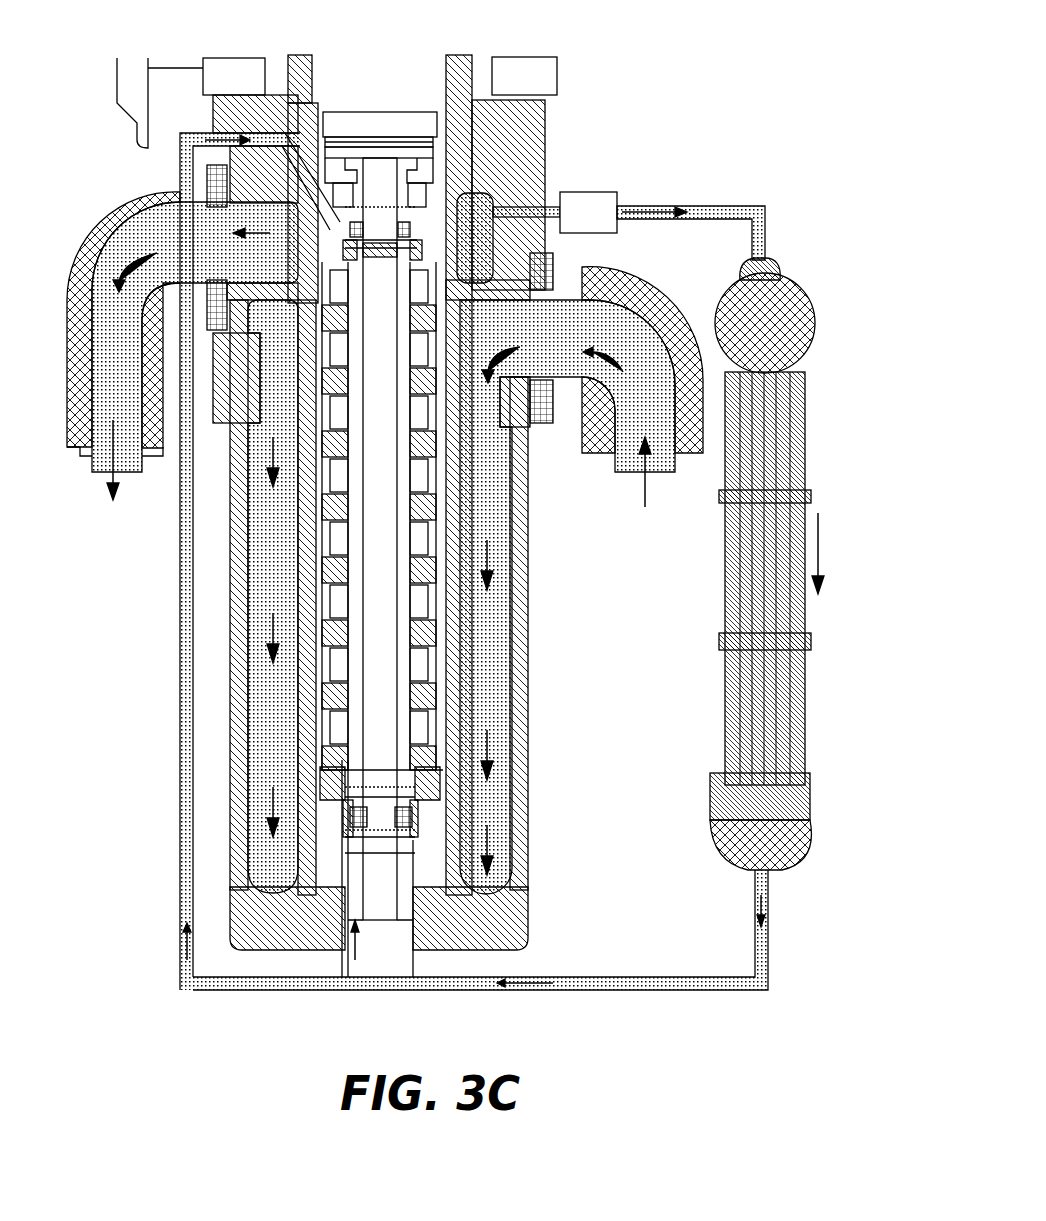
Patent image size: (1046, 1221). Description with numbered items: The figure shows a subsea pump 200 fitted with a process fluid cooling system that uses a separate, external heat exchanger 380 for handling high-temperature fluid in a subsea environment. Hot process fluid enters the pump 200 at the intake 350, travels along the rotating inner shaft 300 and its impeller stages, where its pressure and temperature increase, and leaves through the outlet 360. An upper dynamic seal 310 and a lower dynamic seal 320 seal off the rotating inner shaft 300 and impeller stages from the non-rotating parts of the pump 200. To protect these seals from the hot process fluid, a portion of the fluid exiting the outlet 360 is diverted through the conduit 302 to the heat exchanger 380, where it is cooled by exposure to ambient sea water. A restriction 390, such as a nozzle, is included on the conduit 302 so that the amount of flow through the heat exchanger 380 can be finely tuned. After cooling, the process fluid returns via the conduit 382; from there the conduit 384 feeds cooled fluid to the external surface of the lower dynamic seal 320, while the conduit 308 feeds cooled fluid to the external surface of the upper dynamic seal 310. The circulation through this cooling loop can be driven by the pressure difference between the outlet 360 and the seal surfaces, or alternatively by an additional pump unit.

The pump 200 is at (600, 108).
The inner shaft 300 is at (370, 648).
The conduit 302 is at (710, 207).
The conduit 308 is at (183, 158).
The upper dynamic seal 310 is at (379, 207).
The lower dynamic seal 320 is at (378, 840).
The intake 350 is at (565, 336).
The outlet 360 is at (286, 270).
The heat exchanger 380 is at (725, 577).
The conduit 382 is at (573, 987).
The conduit 384 is at (347, 960).
The restriction 390 is at (609, 223).